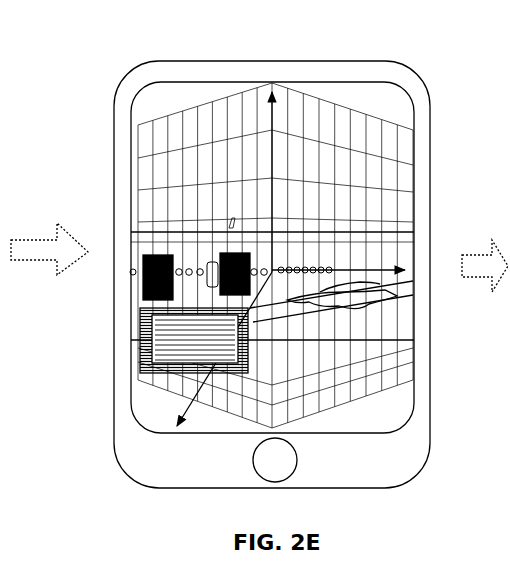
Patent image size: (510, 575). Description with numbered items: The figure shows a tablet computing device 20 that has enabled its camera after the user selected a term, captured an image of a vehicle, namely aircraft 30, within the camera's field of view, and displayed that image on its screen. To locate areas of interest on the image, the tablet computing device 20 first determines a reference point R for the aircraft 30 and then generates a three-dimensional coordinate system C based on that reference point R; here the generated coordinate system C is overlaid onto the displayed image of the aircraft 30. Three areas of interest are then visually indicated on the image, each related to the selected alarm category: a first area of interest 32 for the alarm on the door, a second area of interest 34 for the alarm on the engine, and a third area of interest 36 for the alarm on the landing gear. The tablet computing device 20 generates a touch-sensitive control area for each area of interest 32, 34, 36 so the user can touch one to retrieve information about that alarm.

The tablet computing device 20 is at (130, 48).
The 3D coordinate system C is at (367, 98).
The aircraft 30 is at (393, 345).
The reference point R is at (258, 268).
The first area of interest 32 is at (223, 253).
The second area of interest 34 is at (140, 326).
The third area of interest 36 is at (143, 278).